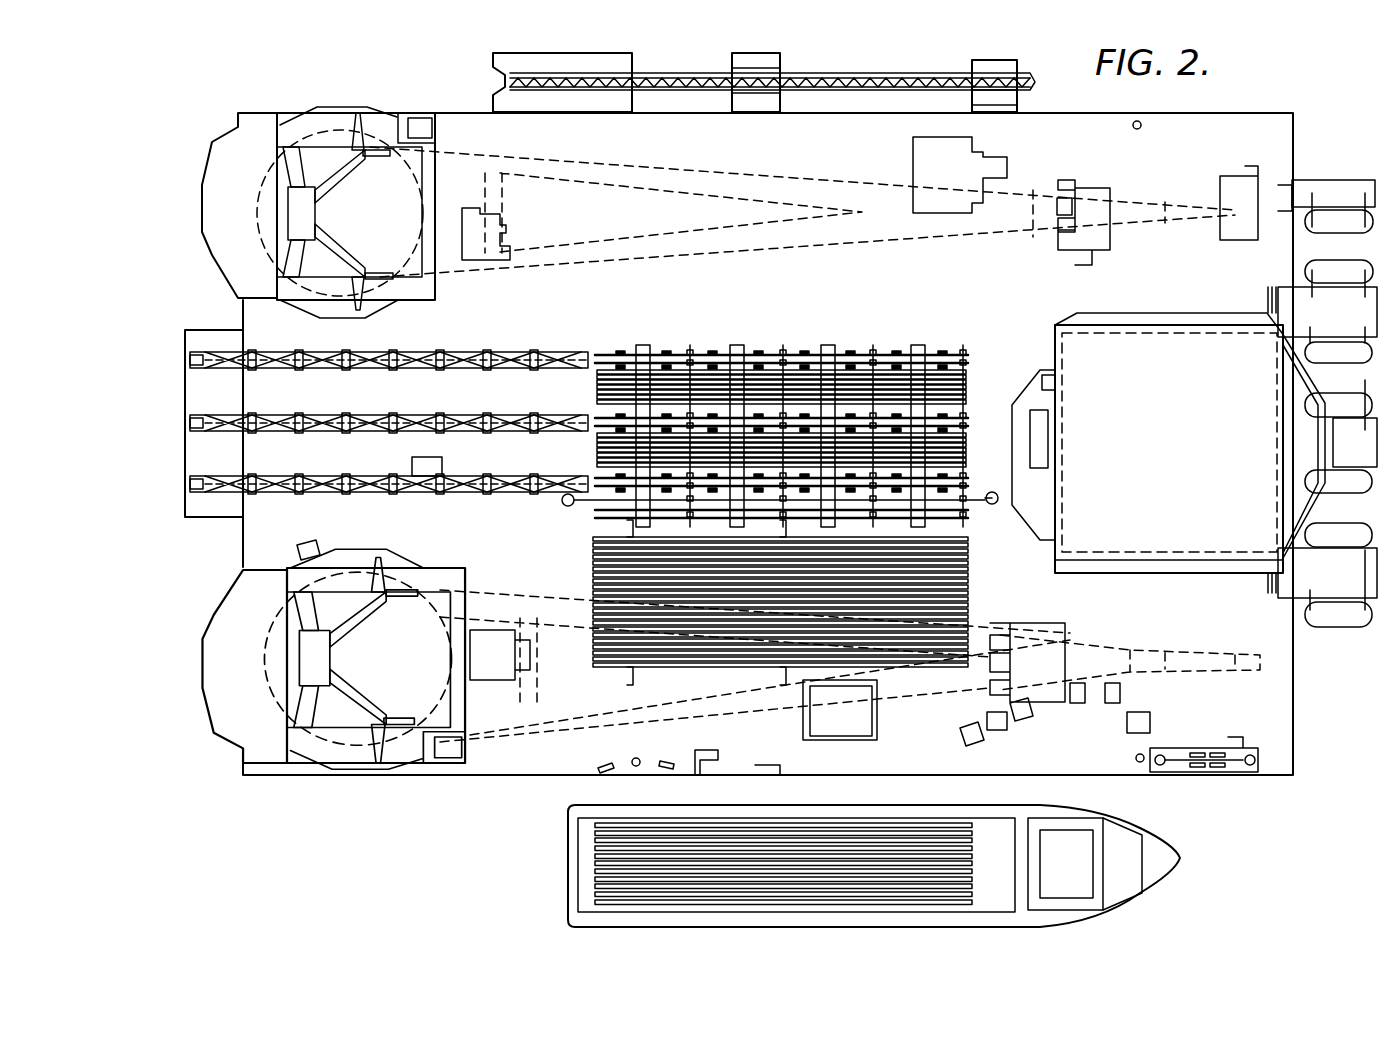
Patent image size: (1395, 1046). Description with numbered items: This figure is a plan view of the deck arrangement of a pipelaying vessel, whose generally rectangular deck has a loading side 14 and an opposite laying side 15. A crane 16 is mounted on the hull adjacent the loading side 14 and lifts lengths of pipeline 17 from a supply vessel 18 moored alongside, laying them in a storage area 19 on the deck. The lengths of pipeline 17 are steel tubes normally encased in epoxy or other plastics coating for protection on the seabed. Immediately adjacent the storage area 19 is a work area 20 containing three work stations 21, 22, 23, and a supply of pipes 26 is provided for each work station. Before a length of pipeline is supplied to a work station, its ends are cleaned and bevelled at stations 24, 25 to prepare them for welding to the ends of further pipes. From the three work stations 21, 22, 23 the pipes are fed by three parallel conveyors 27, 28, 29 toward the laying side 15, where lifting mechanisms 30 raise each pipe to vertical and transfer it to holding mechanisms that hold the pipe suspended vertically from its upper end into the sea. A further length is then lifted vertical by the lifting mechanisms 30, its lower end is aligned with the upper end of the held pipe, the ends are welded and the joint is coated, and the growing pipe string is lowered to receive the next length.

The loading side 14 is at (487, 774).
The laying side 15 is at (450, 113).
The crane 16 is at (327, 167).
The lengths of pipeline 17 is at (618, 857).
The supply vessel 18 is at (578, 905).
The storage area 19 is at (979, 575).
The work area 20 is at (748, 415).
The work station 21 is at (614, 343).
The work station 22 is at (605, 410).
The work station 23 is at (605, 475).
The cleaning and bevelling station 24 is at (563, 505).
The cleaning and bevelling station 25 is at (992, 491).
The supply of pipes 26 is at (985, 380).
The conveyor 27 is at (252, 354).
The conveyor 28 is at (292, 417).
The conveyor 29 is at (294, 478).
The lifting mechanisms 30 is at (170, 347).